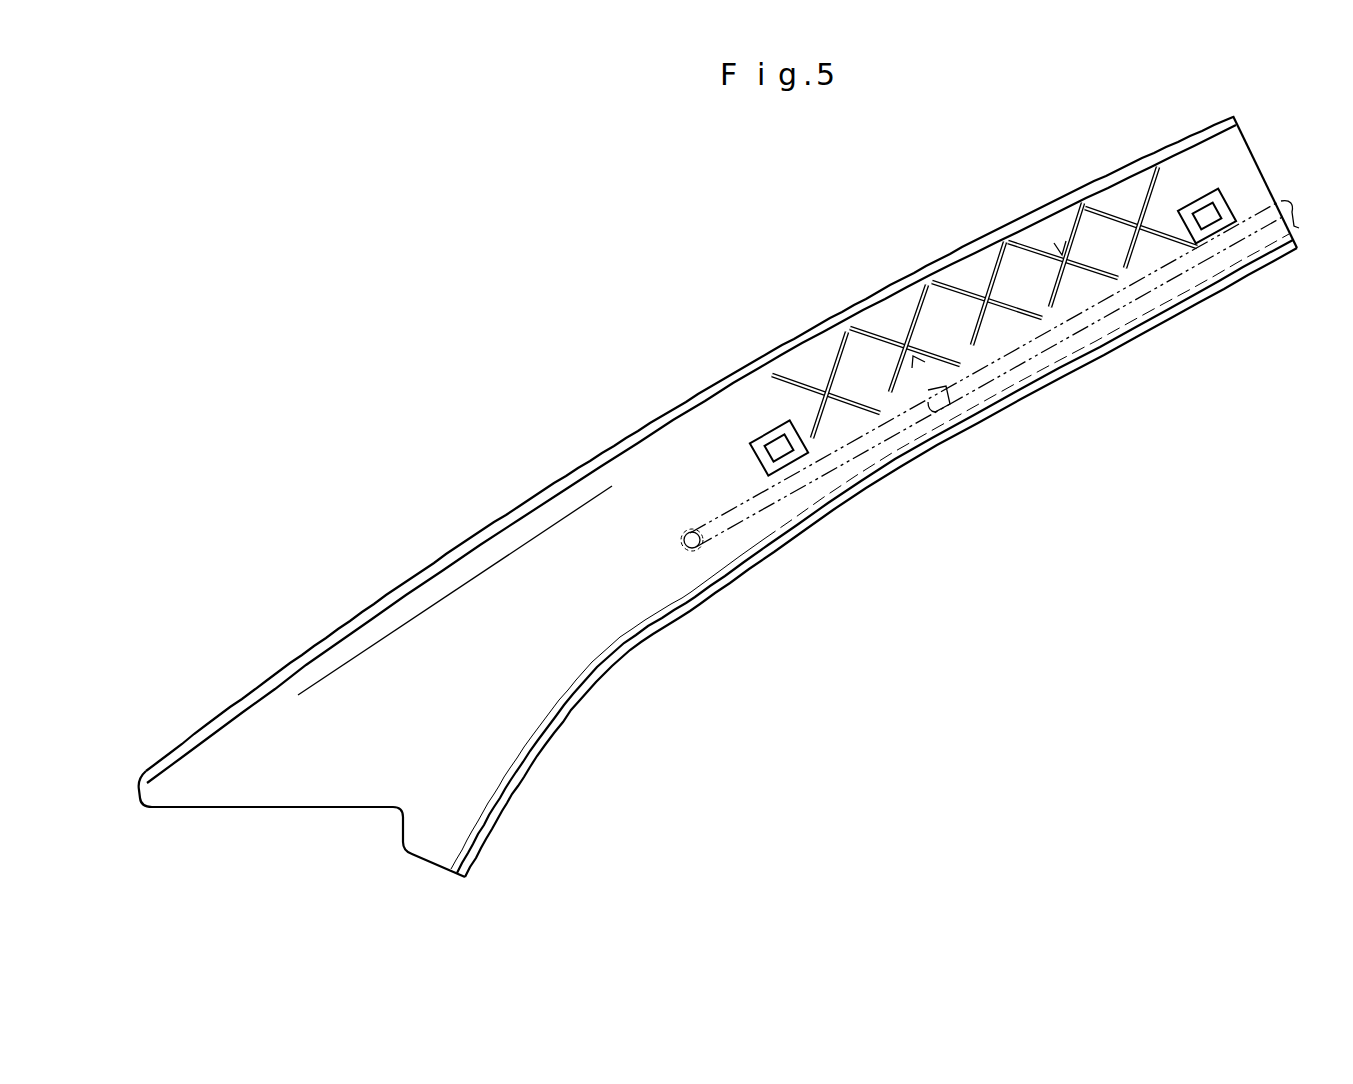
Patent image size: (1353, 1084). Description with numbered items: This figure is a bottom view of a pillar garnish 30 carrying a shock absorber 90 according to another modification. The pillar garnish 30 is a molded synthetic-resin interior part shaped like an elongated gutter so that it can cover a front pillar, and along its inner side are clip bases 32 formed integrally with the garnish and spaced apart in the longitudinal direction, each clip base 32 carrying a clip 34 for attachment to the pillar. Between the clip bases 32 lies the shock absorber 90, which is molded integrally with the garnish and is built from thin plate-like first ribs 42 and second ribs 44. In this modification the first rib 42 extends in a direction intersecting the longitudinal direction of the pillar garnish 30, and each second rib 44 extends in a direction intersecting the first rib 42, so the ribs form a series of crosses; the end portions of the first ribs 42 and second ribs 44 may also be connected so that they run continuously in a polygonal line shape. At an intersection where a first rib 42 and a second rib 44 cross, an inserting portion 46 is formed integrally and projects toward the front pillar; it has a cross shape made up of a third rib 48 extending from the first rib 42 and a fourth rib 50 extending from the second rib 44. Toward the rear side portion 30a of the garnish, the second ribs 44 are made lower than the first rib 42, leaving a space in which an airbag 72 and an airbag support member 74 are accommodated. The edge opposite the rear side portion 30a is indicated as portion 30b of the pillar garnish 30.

The pillar garnish 30 is at (718, 496).
The rear side portion 30a is at (862, 487).
The upper edge portion of garnish 30b is at (768, 352).
The clip base 32 is at (770, 433).
The clip 34 is at (783, 450).
The first rib 42 is at (905, 343).
The second rib 44 is at (802, 383).
The inserting portion 46 is at (1062, 255).
The third rib 48 is at (857, 326).
The fourth rib 50 is at (1052, 242).
The airbag 72 is at (1065, 378).
The airbag support member 74 is at (755, 517).
The shock absorber 90 is at (930, 270).